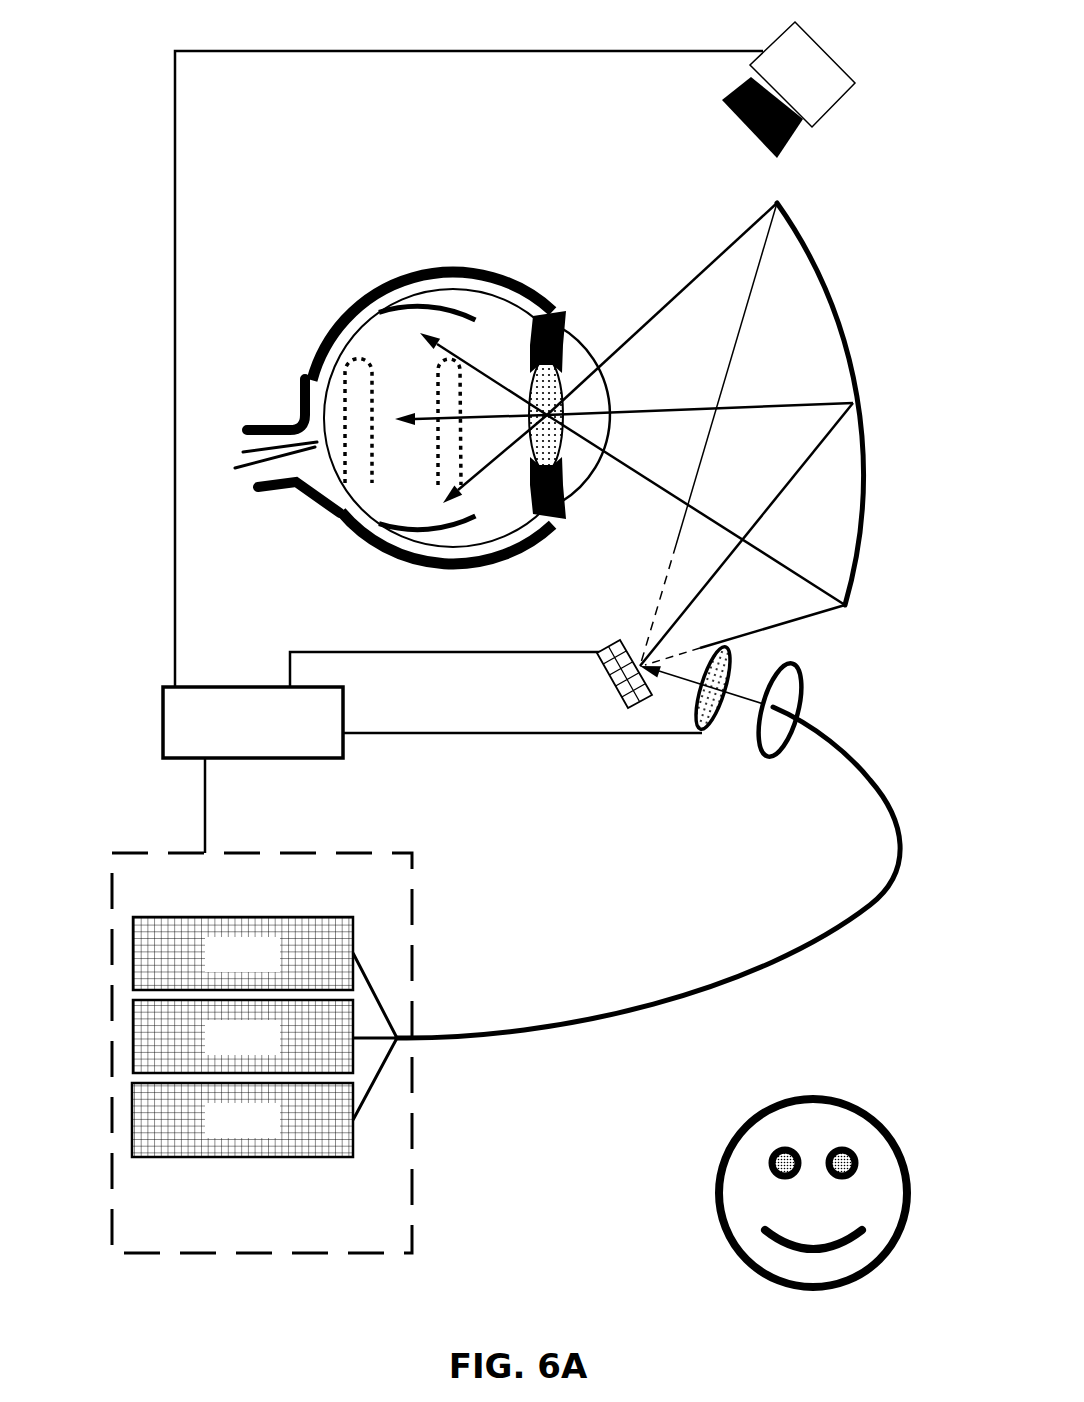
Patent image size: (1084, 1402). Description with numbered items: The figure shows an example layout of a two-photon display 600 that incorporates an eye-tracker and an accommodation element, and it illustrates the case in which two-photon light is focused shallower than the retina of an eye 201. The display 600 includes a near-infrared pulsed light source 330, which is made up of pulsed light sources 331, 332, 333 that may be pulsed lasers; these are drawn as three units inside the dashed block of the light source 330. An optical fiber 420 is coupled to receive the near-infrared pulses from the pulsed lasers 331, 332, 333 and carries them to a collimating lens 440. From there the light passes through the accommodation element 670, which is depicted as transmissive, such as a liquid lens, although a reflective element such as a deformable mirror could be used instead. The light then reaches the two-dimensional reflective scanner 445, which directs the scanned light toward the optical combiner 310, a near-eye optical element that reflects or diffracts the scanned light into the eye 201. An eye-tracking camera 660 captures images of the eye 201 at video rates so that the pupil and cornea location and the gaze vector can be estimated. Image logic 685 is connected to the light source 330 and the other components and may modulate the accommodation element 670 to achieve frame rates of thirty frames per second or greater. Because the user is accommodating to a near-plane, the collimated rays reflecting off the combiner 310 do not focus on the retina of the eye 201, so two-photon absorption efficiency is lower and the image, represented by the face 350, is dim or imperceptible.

The two-photon display 600 is at (407, 451).
The eye 201 is at (334, 250).
The optical combiner 310 is at (836, 262).
The eye-tracking camera 660 is at (804, 127).
The two-dimensional reflective scanner 445 is at (615, 688).
The accommodation element 670 is at (727, 657).
The collimating lens 440 is at (768, 754).
The optical fiber 420 is at (893, 882).
The target image / display content 350 is at (793, 1095).
The image logic 685 is at (253, 722).
The near-infrared pulsed light source 330 is at (262, 1053).
The pulsed light source 331 is at (243, 953).
The pulsed light source 332 is at (243, 1036).
The pulsed light source 333 is at (242, 1120).